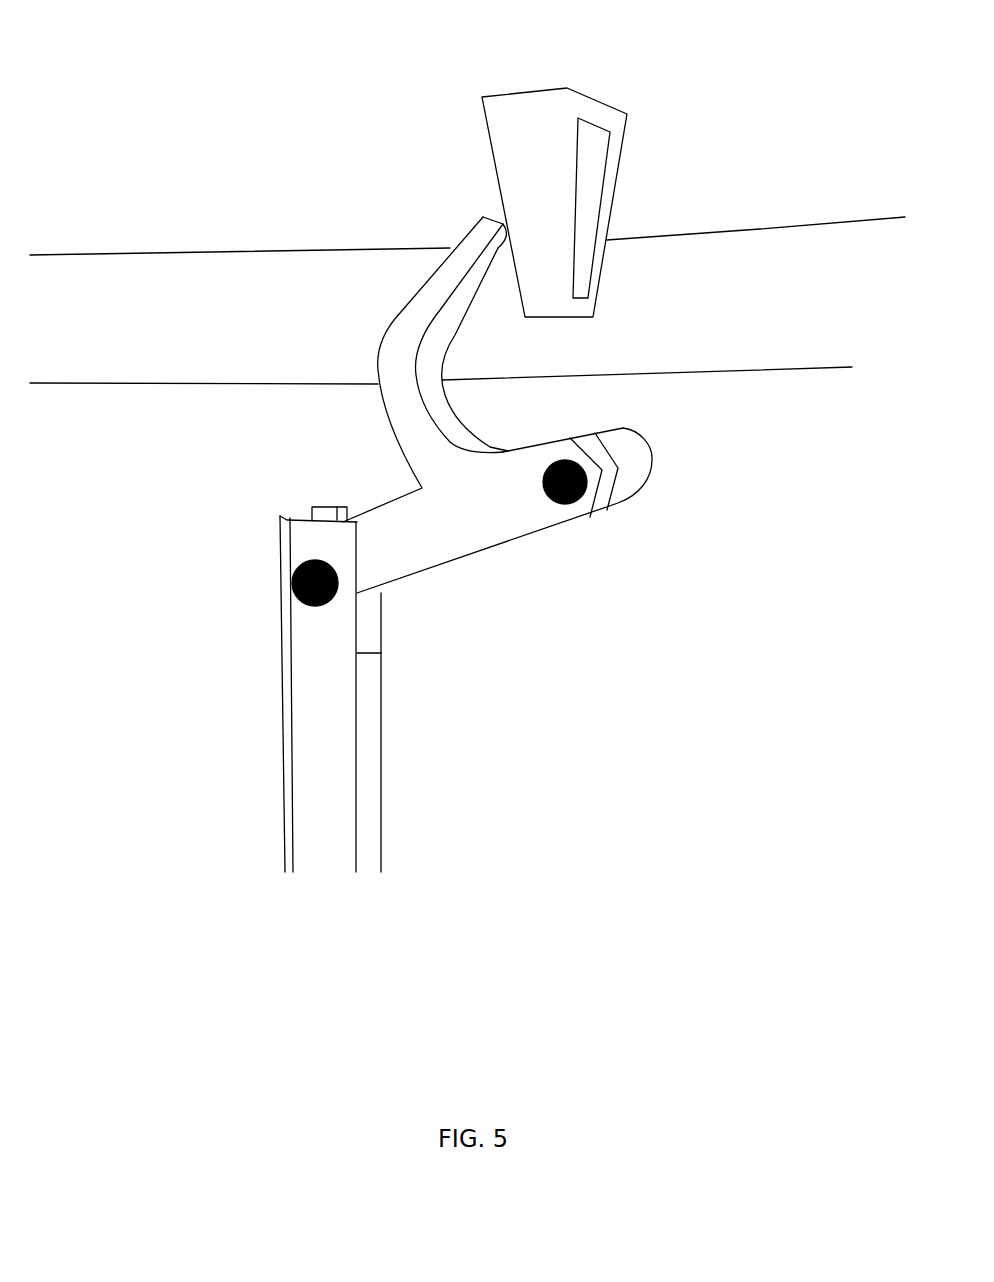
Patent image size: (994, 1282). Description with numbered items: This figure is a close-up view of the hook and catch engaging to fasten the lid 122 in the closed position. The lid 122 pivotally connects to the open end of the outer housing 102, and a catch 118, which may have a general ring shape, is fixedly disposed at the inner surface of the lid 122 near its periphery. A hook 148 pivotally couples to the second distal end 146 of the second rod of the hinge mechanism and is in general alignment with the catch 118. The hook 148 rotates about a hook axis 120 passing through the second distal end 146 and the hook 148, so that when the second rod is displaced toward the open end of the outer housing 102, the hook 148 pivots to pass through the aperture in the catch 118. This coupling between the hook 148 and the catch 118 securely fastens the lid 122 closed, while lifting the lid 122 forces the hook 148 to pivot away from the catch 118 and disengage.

The outer housing 102 is at (290, 395).
The catch 118 is at (553, 160).
The hook axis 120 is at (292, 588).
The lid 122 is at (412, 223).
The second distal end 146 is at (328, 782).
The hook 148 is at (477, 517).